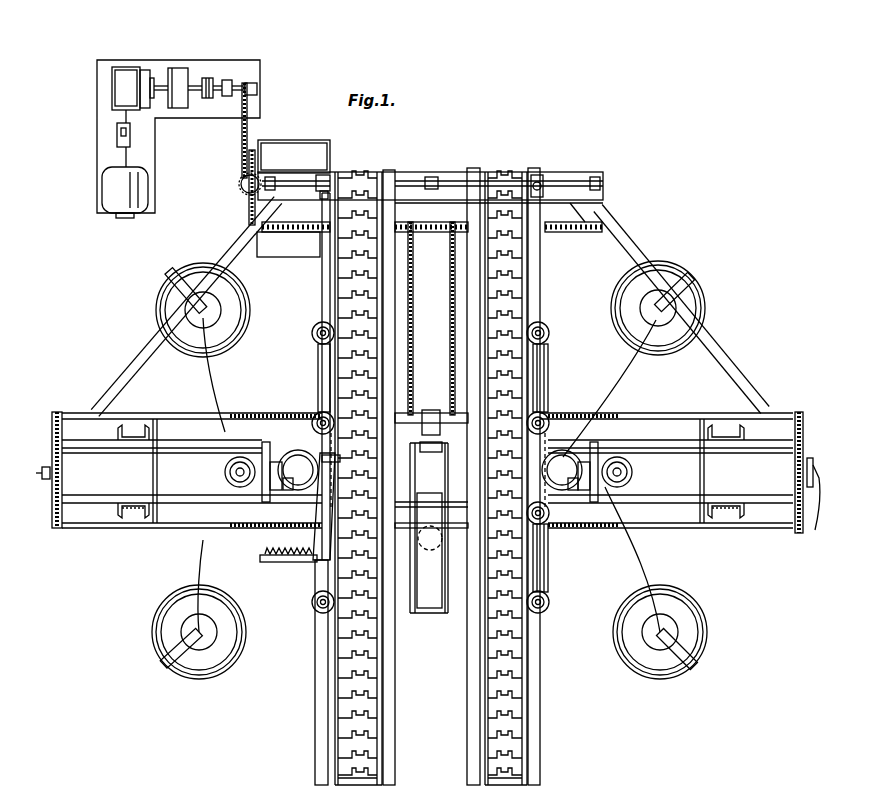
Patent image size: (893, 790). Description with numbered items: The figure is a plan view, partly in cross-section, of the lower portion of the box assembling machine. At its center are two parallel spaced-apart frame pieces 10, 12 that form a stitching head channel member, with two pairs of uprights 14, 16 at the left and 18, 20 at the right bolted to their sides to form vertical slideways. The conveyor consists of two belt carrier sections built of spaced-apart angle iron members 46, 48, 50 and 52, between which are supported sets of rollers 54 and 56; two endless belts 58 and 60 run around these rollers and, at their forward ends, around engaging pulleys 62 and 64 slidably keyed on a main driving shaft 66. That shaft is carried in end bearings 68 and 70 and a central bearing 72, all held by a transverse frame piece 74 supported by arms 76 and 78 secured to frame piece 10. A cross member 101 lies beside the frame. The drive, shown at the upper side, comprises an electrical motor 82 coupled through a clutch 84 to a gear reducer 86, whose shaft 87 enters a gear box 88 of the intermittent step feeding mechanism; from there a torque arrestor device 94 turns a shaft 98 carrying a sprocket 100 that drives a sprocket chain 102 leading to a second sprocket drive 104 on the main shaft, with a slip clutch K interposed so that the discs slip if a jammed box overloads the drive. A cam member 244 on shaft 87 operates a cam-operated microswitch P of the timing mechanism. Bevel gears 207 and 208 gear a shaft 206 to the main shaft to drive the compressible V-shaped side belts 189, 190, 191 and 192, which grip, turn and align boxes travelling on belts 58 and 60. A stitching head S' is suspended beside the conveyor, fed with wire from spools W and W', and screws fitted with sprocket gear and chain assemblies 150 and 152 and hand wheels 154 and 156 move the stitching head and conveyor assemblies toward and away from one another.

The cam-operated microswitch P is at (155, 118).
The gear reducer 86 is at (114, 75).
The shaft 87 is at (158, 92).
The gear box 88 is at (188, 68).
The cam member 244 is at (150, 70).
The torque arrestor device 94 is at (208, 78).
The shaft 98 is at (230, 80).
The sprocket 100 is at (257, 86).
The sprocket chain 102 is at (247, 130).
The second sprocket drive 104 is at (240, 188).
The slip clutch K is at (238, 188).
The clutch 84 is at (117, 136).
The electrical motor 82 is at (106, 189).
The bearing 70 is at (271, 177).
The main driving shaft 66 is at (300, 182).
The transverse frame piece 74 is at (600, 196).
The bevel gear 207 is at (330, 178).
The bevel gear 208 is at (328, 172).
The bearing 72 is at (434, 177).
The bearing 68 is at (594, 177).
The engaging pulley 62 is at (538, 175).
The cross member 101 is at (292, 250).
The shaft 206 is at (322, 296).
The angle iron member 52 is at (315, 683).
The rollers 56 is at (380, 775).
The engaging pulley 64 is at (392, 172).
The angle iron member 50 is at (392, 697).
The angle iron member 46 is at (466, 648).
The rollers 54 is at (525, 775).
The angle iron member 48 is at (540, 676).
The endless belt 60 is at (512, 750).
The endless belt 58 is at (414, 272).
The side belts 189 is at (318, 380).
The side belts 191 is at (548, 365).
The side belts 192 is at (548, 568).
The frame piece 10 is at (636, 440).
The frame piece 12 is at (692, 497).
The upright 14 is at (135, 438).
The upright 16 is at (140, 518).
The upright 18 is at (722, 438).
The upright 20 is at (728, 518).
The wheel 156 is at (50, 460).
The sprocket gear and chain assembly 152 is at (52, 500).
The sprocket gear and chain assembly 150 is at (805, 418).
The wheel 154 is at (812, 490).
The stitching head S' is at (429, 475).
The side belts 190 is at (312, 580).
The arm 78 is at (228, 258).
The arm 76 is at (626, 255).
The spool W' is at (207, 313).
The spool W is at (447, 470).